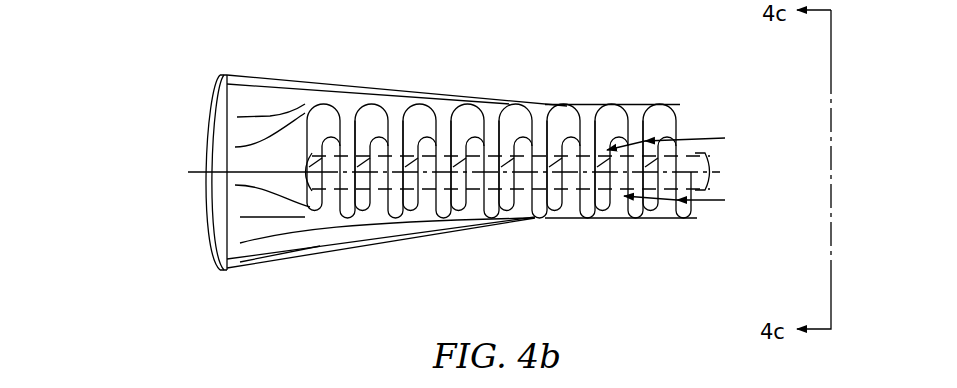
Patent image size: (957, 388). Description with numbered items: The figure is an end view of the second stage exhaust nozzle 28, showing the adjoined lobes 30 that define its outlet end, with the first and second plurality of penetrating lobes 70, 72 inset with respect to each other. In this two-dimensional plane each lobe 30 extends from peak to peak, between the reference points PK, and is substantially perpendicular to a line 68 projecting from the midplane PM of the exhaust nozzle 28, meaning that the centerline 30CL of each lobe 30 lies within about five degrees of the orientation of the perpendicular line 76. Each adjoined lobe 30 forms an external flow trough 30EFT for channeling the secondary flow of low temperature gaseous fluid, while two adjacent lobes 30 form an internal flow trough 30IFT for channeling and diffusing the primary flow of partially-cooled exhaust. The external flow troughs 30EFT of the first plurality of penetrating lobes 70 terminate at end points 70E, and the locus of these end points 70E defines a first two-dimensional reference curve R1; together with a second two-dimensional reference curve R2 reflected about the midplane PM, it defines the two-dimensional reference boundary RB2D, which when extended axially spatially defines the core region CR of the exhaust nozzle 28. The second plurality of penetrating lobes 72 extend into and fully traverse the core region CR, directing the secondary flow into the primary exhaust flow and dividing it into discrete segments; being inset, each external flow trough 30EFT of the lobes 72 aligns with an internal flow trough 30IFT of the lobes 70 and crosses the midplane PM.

The second stage exhaust nozzle 28 is at (654, 39).
The adjoined lobes 30 is at (556, 175).
The centerline of each lobe 30CL is at (453, 250).
The external flow trough 30EFT is at (572, 262).
The internal flow trough 30IFT is at (562, 112).
The line projecting from a midplane 68 is at (498, 104).
The first plurality of penetrating lobes 70 is at (680, 137).
The second plurality of penetrating lobes 72 is at (689, 187).
The end points 70E is at (373, 215).
The perpendicular line 76 is at (428, 200).
The peak reference points PK is at (713, 240).
The midplane PM is at (188, 172).
The core region CR is at (303, 175).
The first two-dimensional reference curve R1 is at (368, 193).
The second two-dimensional reference curve R2 is at (348, 192).
The two-dimensional reference boundary RB2D is at (380, 300).